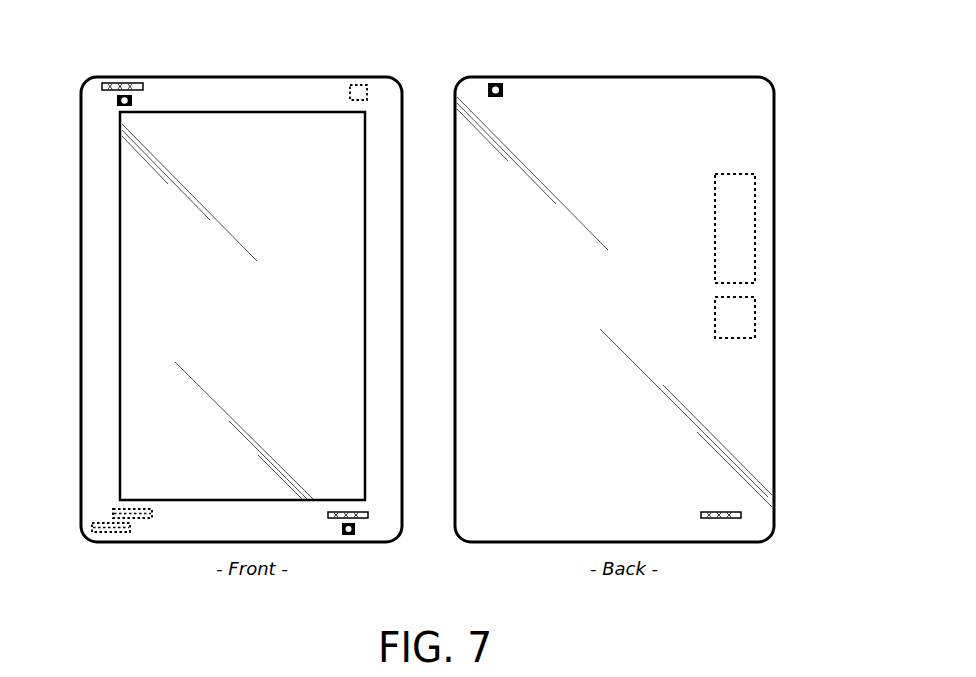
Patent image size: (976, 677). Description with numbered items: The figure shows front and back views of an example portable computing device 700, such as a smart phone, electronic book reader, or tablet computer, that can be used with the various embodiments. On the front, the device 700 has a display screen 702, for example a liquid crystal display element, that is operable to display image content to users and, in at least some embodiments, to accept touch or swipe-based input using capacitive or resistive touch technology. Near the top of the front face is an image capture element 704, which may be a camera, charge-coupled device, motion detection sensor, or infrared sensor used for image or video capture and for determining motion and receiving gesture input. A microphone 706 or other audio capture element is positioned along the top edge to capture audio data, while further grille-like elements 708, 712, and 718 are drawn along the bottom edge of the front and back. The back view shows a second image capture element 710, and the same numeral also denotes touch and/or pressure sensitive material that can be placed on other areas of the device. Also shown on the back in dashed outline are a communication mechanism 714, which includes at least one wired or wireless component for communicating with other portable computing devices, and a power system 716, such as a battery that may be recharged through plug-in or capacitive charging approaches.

The portable computing device 700 is at (800, 86).
The display screen 702 is at (120, 224).
The image capture element 704 is at (117, 101).
The microphone 706 is at (130, 83).
The speaker 708 is at (360, 518).
The image capture element 710 is at (357, 85).
The speaker grille 712 is at (132, 519).
The communication mechanism 714 is at (755, 245).
The power system 716 is at (755, 320).
The microphone 718 is at (109, 533).